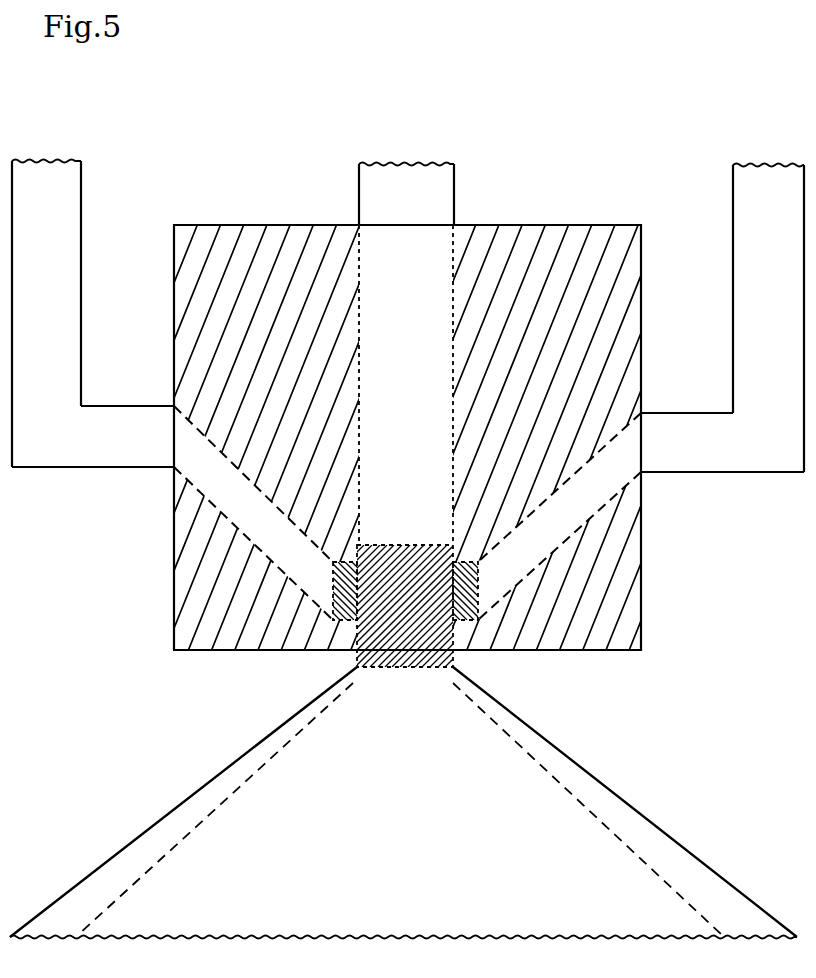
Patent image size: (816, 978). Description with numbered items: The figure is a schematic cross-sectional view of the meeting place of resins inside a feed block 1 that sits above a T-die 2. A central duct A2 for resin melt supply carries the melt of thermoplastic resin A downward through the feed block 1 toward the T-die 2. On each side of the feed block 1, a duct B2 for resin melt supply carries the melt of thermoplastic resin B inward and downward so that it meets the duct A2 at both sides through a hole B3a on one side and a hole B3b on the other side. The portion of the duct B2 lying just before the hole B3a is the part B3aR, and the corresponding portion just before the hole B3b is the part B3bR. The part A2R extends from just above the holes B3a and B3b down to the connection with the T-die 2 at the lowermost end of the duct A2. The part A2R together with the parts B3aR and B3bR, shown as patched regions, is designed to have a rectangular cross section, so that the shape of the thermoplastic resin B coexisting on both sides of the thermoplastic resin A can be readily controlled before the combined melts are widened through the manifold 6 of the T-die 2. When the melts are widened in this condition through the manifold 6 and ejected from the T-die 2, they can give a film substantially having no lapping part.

The feed block 1 is at (640, 534).
The T-die 2 is at (602, 782).
The manifold 6 is at (597, 840).
The thermoplastic resin A is at (300, 800).
The thermoplastic resin B is at (167, 840).
The duct for resin melt supply A2 is at (455, 190).
The duct for resin melt supply B2 is at (81, 188).
The part where the duct for resin melt supply and the T-die are connected to each ot A2R is at (352, 653).
The hole B3a is at (343, 619).
The hole B3b is at (474, 622).
The part of the resin melt supply duct just before the hole B3aR is at (342, 590).
The part of the resin melt supply duct just before the hole B3bR is at (470, 600).